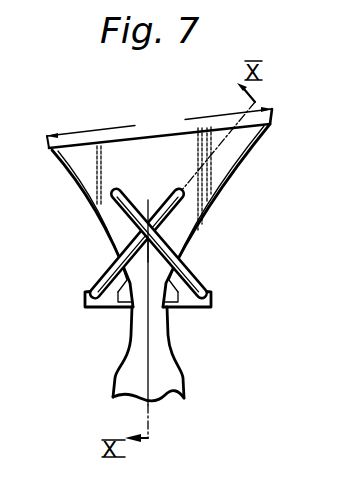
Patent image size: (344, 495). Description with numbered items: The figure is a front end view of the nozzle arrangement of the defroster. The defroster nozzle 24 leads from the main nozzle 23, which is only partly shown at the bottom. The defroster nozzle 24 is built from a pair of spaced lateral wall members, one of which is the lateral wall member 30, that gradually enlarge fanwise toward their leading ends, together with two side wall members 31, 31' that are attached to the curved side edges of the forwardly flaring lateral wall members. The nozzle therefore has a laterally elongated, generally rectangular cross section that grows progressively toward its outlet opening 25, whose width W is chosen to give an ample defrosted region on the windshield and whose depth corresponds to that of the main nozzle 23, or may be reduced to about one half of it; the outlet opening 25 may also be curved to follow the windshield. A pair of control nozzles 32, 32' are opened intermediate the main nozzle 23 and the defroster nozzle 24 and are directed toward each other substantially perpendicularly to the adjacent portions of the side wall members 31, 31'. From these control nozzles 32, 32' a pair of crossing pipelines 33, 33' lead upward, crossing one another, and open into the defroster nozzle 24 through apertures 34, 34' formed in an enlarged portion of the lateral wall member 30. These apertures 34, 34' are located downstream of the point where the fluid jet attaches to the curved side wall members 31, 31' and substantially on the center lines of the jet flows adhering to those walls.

The main nozzle 23 is at (183, 391).
The defroster nozzle 24 is at (157, 215).
The outlet opening 25 is at (113, 141).
The lateral wall member 30 is at (165, 173).
The side wall member 31 is at (227, 215).
The side wall member 31' is at (78, 228).
The control nozzle 32 is at (196, 319).
The control nozzle 32' is at (104, 327).
The crossing pipeline 33 is at (174, 243).
The crossing pipeline 33' is at (123, 244).
The aperture 34 is at (78, 192).
The aperture 34' is at (225, 178).